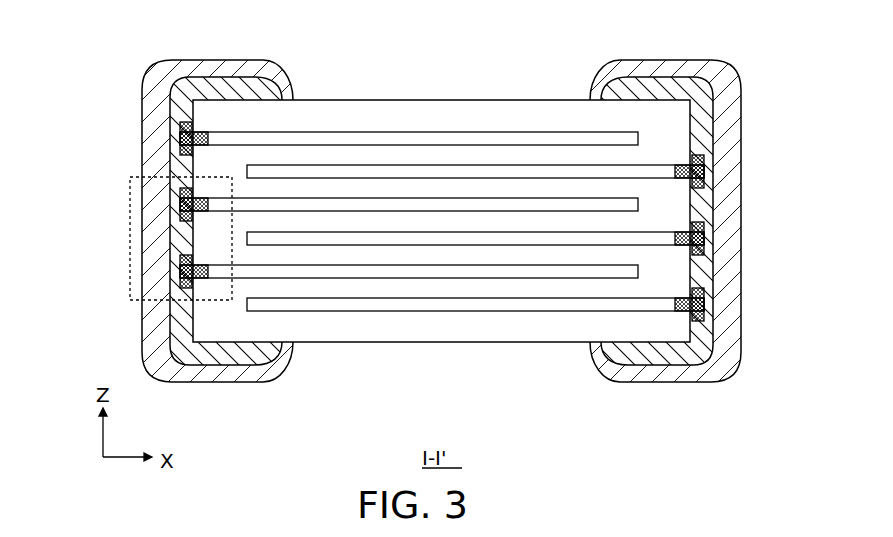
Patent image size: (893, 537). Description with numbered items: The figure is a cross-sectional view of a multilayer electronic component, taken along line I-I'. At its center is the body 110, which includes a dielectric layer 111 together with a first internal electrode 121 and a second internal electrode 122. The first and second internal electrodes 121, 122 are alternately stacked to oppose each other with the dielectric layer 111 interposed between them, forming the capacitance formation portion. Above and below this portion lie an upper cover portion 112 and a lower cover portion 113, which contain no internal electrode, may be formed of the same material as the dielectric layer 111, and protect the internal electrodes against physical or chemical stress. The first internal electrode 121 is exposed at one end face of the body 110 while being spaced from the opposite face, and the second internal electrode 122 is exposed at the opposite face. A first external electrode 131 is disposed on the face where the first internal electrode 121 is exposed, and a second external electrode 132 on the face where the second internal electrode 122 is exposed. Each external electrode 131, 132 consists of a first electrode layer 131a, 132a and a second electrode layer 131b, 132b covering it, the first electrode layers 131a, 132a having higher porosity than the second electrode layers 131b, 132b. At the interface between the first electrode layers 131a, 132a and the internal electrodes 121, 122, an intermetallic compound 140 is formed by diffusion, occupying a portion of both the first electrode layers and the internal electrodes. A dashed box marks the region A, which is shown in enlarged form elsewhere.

The body 110 is at (340, 100).
The dielectric layer 111 is at (620, 253).
The upper cover portion 112 is at (475, 110).
The lower cover portion 113 is at (474, 335).
The first internal electrode 121 is at (407, 137).
The second internal electrode 122 is at (543, 172).
The first external electrode 131 is at (150, 221).
The first electrode layer 131a is at (173, 103).
The second electrode layer 131b is at (160, 158).
The second external electrode 132 is at (734, 221).
The first electrode layer 132a is at (706, 131).
The second electrode layer 132b is at (727, 186).
The intermetallic compound 140 is at (713, 239).
The enlarged region A is at (130, 243).